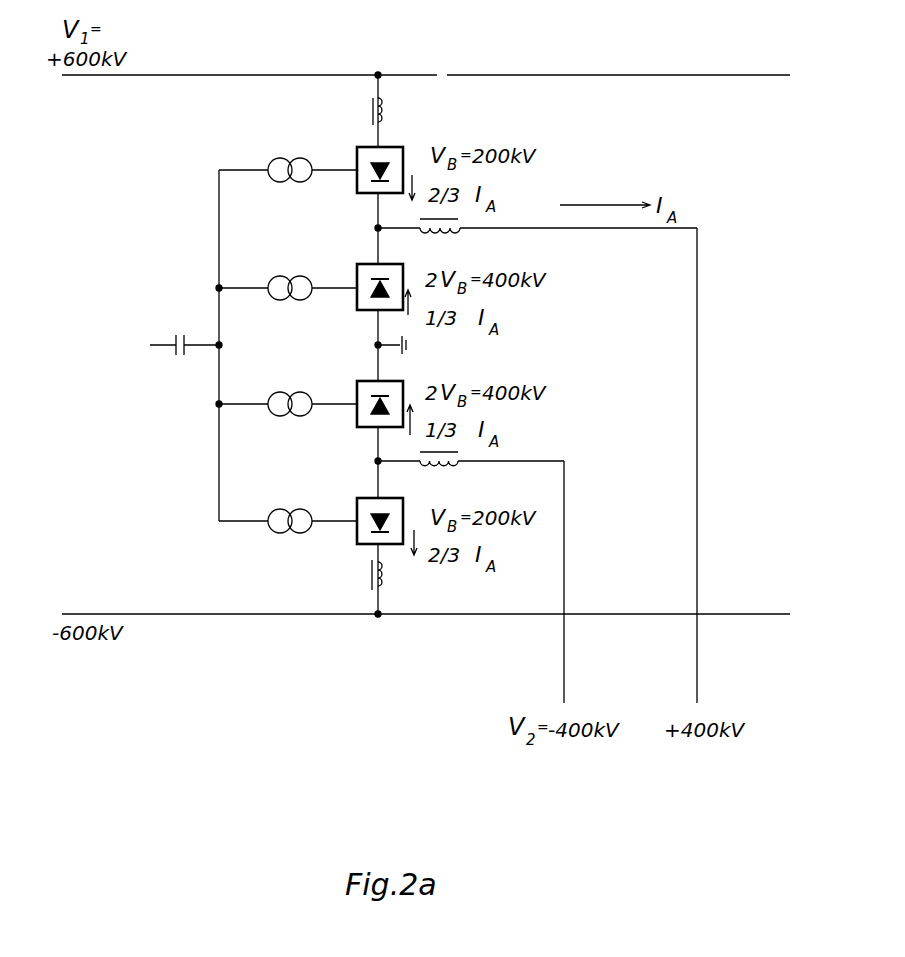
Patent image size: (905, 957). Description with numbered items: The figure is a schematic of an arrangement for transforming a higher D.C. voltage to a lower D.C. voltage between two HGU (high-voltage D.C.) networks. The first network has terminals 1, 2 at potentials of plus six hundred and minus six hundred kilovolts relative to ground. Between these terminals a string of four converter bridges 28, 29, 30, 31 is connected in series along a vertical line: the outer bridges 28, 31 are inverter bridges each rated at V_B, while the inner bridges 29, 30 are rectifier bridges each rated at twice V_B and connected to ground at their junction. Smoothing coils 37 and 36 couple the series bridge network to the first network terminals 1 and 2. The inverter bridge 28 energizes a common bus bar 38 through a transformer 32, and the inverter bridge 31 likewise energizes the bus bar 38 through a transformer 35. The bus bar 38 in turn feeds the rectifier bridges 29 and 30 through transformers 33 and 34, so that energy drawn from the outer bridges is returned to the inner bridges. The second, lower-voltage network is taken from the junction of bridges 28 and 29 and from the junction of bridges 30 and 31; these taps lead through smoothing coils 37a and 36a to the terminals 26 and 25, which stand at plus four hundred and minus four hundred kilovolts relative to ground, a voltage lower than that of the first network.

The terminal 1 is at (233, 75).
The terminal 2 is at (202, 616).
The terminal 25 is at (565, 688).
The terminal 26 is at (699, 688).
The inverter bridge 28 is at (372, 147).
The rectifier bridge 29 is at (372, 264).
The rectifier bridge 30 is at (372, 381).
The inverter bridge 31 is at (372, 498).
The transformer 32 is at (300, 152).
The transformer 33 is at (300, 270).
The transformer 34 is at (300, 386).
The transformer 35 is at (298, 503).
The smoothing coil 36 is at (396, 577).
The smoothing coil 36a is at (471, 472).
The smoothing coil 37 is at (394, 111).
The smoothing coil 37a is at (537, 239).
The bus bar 38 is at (219, 258).